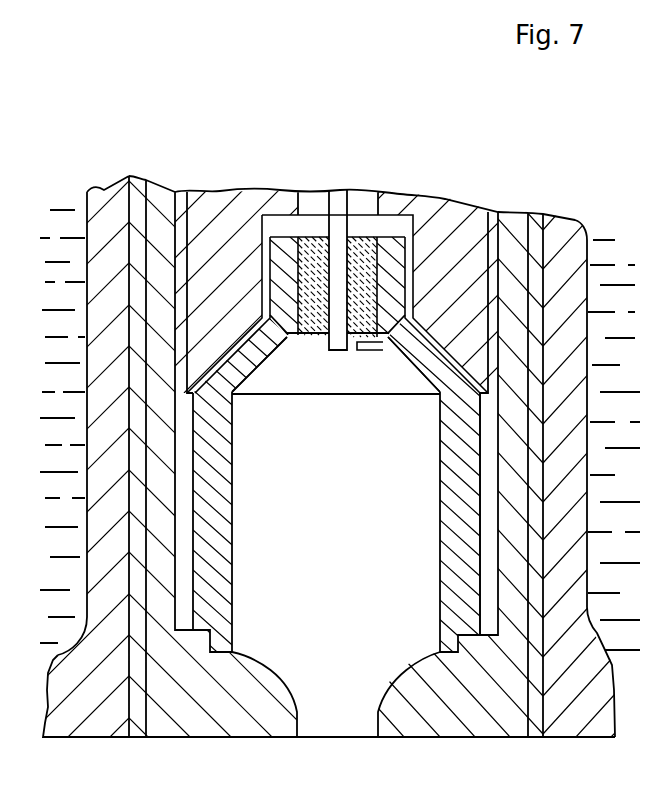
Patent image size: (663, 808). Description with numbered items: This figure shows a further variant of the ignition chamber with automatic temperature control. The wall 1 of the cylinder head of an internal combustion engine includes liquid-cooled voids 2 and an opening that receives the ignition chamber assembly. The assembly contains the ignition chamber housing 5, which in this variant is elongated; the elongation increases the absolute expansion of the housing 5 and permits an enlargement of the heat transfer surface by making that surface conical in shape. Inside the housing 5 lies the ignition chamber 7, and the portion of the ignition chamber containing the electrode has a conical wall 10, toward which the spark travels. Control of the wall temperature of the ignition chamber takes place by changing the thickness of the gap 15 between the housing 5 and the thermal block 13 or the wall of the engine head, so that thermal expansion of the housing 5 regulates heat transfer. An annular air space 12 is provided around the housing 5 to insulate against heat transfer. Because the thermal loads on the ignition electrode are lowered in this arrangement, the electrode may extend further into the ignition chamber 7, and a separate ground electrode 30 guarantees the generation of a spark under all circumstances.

The wall 1 is at (69, 706).
The liquid-cooled voids 2 is at (65, 611).
The ignition chamber housing 5 is at (216, 543).
The ignition chamber 7 is at (281, 529).
The ignition chamber wall 10 is at (260, 365).
The annular air space 12 is at (490, 592).
The thermal block 13 is at (470, 243).
The gap 15 is at (432, 343).
The ground electrode 30 is at (368, 345).